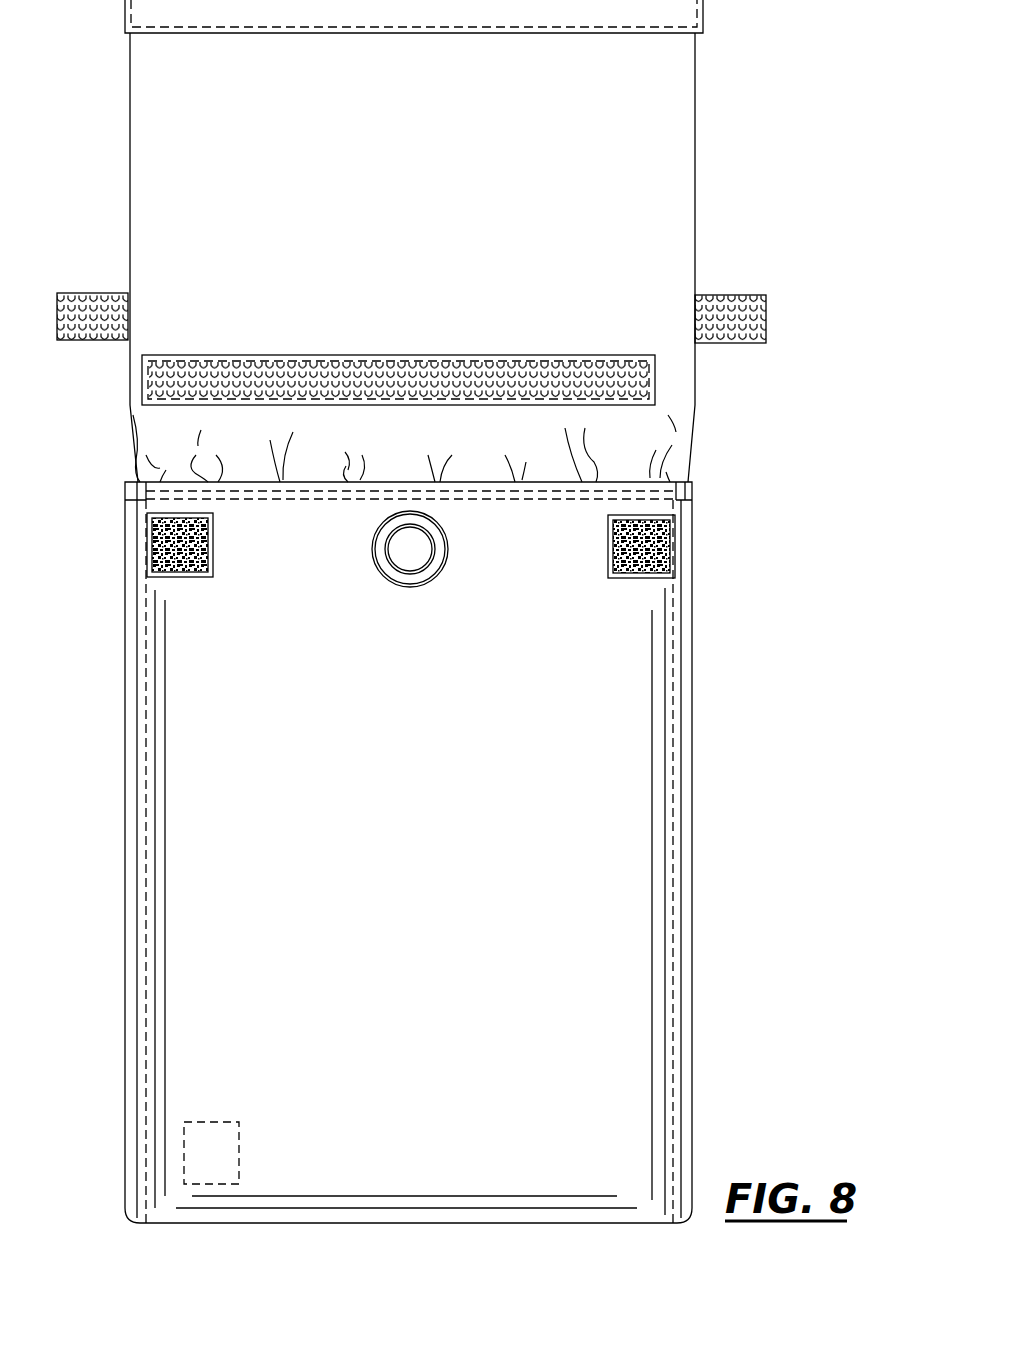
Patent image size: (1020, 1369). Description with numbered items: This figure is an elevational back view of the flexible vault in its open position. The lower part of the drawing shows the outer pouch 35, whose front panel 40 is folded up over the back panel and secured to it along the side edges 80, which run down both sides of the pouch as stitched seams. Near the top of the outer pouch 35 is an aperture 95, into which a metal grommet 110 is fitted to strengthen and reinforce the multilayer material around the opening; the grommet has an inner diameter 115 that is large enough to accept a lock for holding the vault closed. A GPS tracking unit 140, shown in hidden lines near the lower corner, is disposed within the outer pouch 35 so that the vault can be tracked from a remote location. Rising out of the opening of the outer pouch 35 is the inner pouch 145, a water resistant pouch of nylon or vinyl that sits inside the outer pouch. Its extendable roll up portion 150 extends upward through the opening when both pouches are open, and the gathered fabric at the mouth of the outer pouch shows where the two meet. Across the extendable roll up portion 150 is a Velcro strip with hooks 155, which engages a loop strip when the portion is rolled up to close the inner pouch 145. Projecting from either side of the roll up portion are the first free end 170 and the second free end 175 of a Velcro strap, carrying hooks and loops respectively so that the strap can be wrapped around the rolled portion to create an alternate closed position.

The outer pouch 35 is at (733, 902).
The front panel 40 is at (218, 836).
The side edges 80 is at (136, 1080).
The aperture 95 is at (416, 553).
The metal grommet 110 is at (440, 557).
The inner diameter 115 is at (428, 542).
The GPS tracking unit 140 is at (205, 1148).
The inner pouch 145 is at (722, 160).
The extendable roll up portion 150 is at (232, 183).
The Velcro strip with hooks 155 is at (158, 377).
The first free end 170 is at (722, 338).
The second free end 175 is at (97, 300).